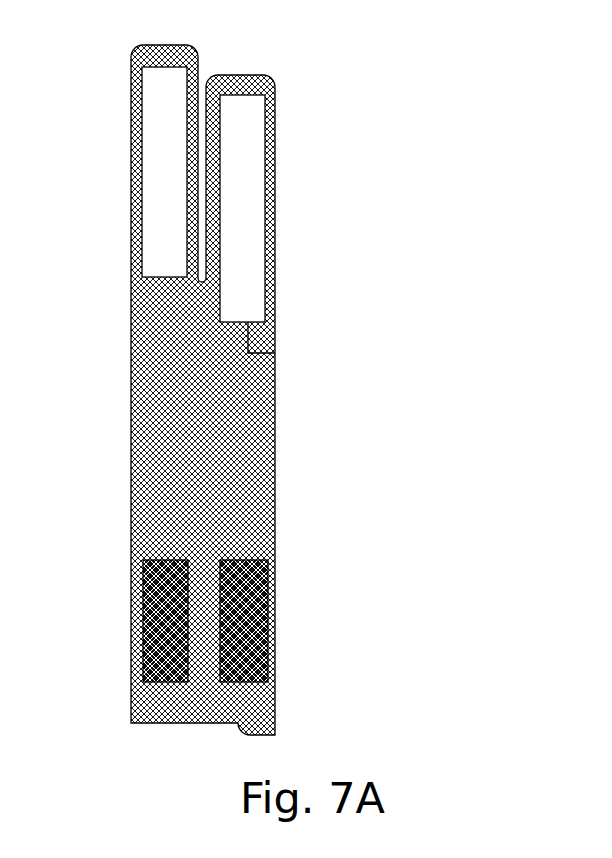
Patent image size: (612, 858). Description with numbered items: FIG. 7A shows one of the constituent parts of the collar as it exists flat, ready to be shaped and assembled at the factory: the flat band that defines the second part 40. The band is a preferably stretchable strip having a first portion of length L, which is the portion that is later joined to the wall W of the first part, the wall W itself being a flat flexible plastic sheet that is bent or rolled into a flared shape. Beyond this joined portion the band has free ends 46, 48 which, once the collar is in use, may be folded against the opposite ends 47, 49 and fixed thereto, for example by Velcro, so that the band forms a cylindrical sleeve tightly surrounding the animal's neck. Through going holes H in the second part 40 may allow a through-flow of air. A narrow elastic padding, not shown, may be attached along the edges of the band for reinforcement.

The second part 40 is at (256, 437).
The free end 46 is at (163, 173).
The free end 48 is at (243, 225).
The opposite end 47 is at (163, 622).
The opposite end 49 is at (276, 607).
The through going holes H is at (150, 368).
The wall W is at (168, 723).
The length L is at (276, 322).